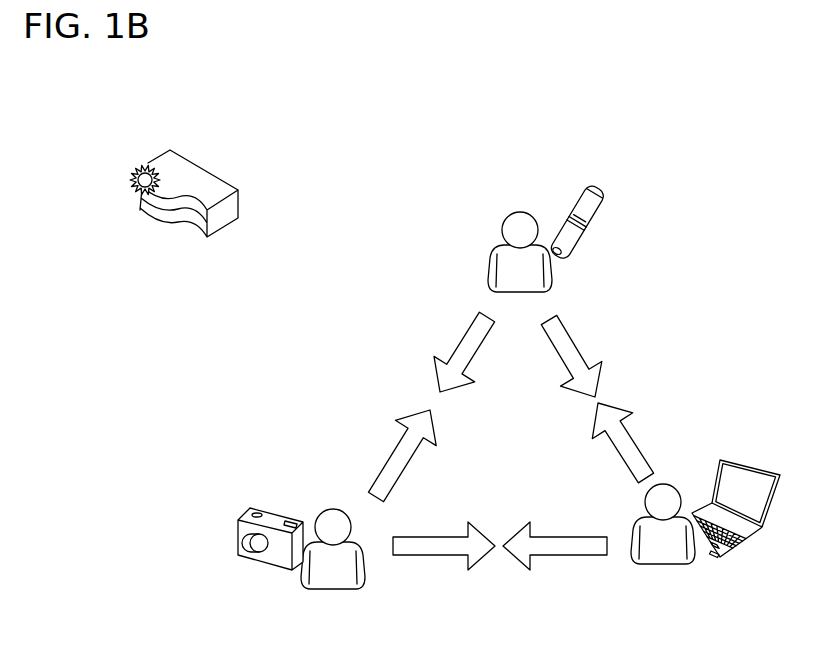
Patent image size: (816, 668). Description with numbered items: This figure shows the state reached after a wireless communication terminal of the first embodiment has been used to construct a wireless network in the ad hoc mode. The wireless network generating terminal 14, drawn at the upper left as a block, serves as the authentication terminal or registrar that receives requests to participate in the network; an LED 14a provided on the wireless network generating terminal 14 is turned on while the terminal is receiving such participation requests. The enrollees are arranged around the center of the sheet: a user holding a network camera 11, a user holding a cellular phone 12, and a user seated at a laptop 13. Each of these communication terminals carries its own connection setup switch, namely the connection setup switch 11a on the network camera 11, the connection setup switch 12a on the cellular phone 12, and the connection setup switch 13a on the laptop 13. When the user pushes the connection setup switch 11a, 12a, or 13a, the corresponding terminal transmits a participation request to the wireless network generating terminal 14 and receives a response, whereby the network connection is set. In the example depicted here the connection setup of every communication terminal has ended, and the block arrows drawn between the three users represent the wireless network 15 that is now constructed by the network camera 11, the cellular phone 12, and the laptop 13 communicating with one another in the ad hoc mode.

The network camera 11 is at (237, 535).
The connection setup switch 11a is at (293, 525).
The cellular phone 12 is at (601, 187).
The connection setup switch 12a is at (565, 258).
The laptop 13 is at (742, 459).
The connection setup switch 13a is at (715, 558).
The wireless network generating terminal 14 is at (201, 163).
The LED 14a is at (147, 166).
The wireless network 15 is at (488, 430).